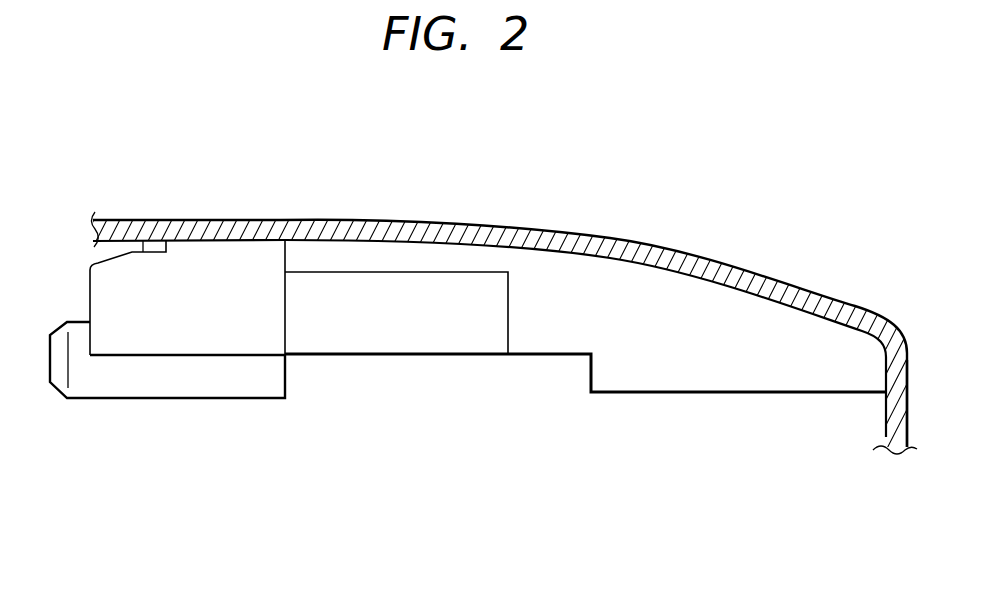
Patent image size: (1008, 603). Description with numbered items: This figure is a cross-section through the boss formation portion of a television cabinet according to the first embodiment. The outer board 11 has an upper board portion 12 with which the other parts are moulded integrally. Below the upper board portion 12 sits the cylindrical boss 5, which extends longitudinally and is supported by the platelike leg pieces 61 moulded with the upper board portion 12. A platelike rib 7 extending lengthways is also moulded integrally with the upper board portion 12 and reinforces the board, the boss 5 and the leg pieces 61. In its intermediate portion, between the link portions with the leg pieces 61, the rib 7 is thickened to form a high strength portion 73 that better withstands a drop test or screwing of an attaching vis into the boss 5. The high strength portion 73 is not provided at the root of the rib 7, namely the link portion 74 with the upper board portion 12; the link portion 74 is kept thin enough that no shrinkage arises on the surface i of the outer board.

The outer board 11 is at (543, 228).
The upper board portion 12 is at (370, 230).
The link portion 74 is at (455, 252).
The surface i is at (600, 230).
The leg piece 61 is at (143, 265).
The boss 5 is at (187, 387).
The high strength portion 73 is at (400, 335).
The rib 7 is at (545, 356).